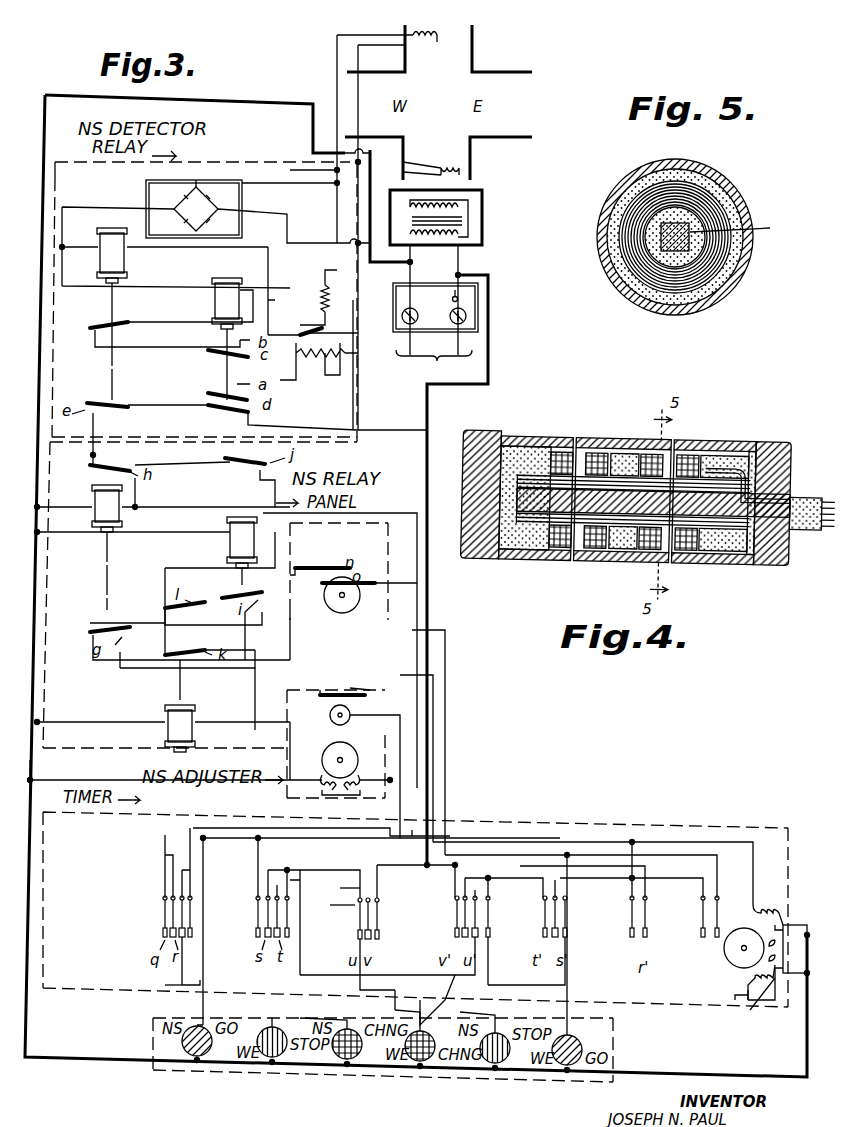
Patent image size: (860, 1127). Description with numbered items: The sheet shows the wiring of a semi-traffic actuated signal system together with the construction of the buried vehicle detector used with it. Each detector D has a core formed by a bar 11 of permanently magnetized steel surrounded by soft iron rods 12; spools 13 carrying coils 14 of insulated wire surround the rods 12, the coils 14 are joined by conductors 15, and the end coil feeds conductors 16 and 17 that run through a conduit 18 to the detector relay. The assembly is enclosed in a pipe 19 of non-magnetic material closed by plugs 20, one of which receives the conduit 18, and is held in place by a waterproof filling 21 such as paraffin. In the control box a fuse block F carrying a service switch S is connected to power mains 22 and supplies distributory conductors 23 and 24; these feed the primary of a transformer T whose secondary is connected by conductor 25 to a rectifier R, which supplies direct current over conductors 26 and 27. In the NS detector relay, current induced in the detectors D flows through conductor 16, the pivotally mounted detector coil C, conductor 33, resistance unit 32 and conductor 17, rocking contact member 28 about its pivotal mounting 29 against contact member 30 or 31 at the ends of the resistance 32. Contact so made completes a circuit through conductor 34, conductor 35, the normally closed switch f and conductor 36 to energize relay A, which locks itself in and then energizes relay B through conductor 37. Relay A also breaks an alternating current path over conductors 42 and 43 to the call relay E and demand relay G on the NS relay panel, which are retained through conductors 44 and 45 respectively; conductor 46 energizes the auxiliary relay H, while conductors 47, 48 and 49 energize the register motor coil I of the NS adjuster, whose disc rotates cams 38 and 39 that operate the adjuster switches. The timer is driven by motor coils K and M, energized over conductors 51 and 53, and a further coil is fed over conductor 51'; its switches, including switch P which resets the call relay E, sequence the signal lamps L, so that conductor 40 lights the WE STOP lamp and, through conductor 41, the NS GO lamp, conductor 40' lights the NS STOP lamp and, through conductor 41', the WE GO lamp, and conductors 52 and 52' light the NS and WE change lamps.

In FIG. 3, the distributory conductor 24 is at (66, 96).
In FIG. 3, the conductor 16 is at (336, 88).
In FIG. 4, the conductor 16 is at (712, 450).
In FIG. 3, the conductor 17 is at (358, 95).
In FIG. 4, the conductor 17 is at (740, 462).
In FIG. 3, the conductor 25 is at (322, 184).
In FIG. 3, the conductor 26 is at (100, 204).
In FIG. 3, the conductor 27 is at (282, 214).
In FIG. 3, the conductor 37 is at (190, 255).
In FIG. 3, the conductor 36 is at (182, 320).
In FIG. 3, the conductor 35 is at (162, 346).
In FIG. 3, the conductor 33 is at (284, 317).
In FIG. 3, the conductor 34 is at (307, 319).
In FIG. 3, the pivotal mounting 29 is at (326, 306).
In FIG. 3, the contact member 28 is at (350, 335).
In FIG. 3, the contact member 30 is at (319, 361).
In FIG. 3, the resistance unit 32 is at (336, 364).
In FIG. 3, the contact member 31 is at (356, 358).
In FIG. 3, the power mains 22 is at (434, 365).
In FIG. 3, the distributory conductor 23 is at (488, 275).
In FIG. 3, the conductor 42 is at (183, 410).
In FIG. 3, the conductor 43 is at (160, 460).
In FIG. 3, the conductor 48 is at (204, 565).
In FIG. 3, the conductor 47 is at (212, 600).
In FIG. 3, the conductor 51' is at (429, 749).
In FIG. 3, the conductor 45 is at (318, 564).
In FIG. 3, the cam 39 is at (328, 608).
In FIG. 3, the conductor 41' is at (385, 833).
In FIG. 3, the conductor 46 is at (243, 730).
In FIG. 3, the conductor 49 is at (250, 690).
In FIG. 3, the cam 38 is at (330, 715).
In FIG. 3, the conductor 41 is at (264, 866).
In FIG. 3, the conductor 44 is at (418, 513).
In FIG. 3, the conductor 52 is at (348, 960).
In FIG. 3, the conductor 53 is at (292, 893).
In FIG. 3, the conductor 40 is at (305, 946).
In FIG. 3, the conductor 52' is at (452, 945).
In FIG. 3, the conductor 40' is at (530, 946).
In FIG. 3, the conductor 51 is at (447, 918).
In FIG. 3, the rectifier R is at (146, 190).
In FIG. 3, the relay B is at (112, 314).
In FIG. 3, the relay A is at (227, 339).
In FIG. 3, the NS call relay E is at (107, 547).
In FIG. 3, the NS demand relay G is at (242, 551).
In FIG. 3, the NS auxiliary relay H is at (180, 728).
In FIG. 3, the transformer T is at (483, 200).
In FIG. 3, the fuse block F is at (393, 288).
In FIG. 3, the service switch S is at (450, 298).
In FIG. 3, the detector coil C is at (320, 292).
In FIG. 3, the traffic actuated detector D is at (437, 42).
In FIG. 3, the register motor coil I is at (340, 768).
In FIG. 3, the timer switch P is at (718, 955).
In FIG. 3, the timer motor coil K is at (765, 970).
In FIG. 3, the timer motor coil M is at (772, 962).
In FIG. 3, the signal lamps L is at (153, 1030).
In FIG. 3, the switch f is at (85, 330).
In FIG. 5, the bar of permanently magnetized steel 11 is at (660, 245).
In FIG. 4, the bar of permanently magnetized steel 11 is at (517, 500).
In FIG. 5, the soft iron rods 12 is at (618, 288).
In FIG. 4, the soft iron rods 12 is at (530, 518).
In FIG. 5, the spools 13 is at (695, 300).
In FIG. 4, the spools 13 is at (592, 450).
In FIG. 5, the coil 14 is at (741, 228).
In FIG. 4, the coil 14 is at (562, 545).
In FIG. 4, the conductors 15 is at (625, 450).
In FIG. 4, the conduit 18 is at (812, 488).
In FIG. 5, the pipe 19 is at (718, 172).
In FIG. 4, the pipe 19 is at (610, 560).
In FIG. 4, the plugs 20 is at (495, 436).
In FIG. 5, the filling 21 is at (628, 190).
In FIG. 4, the filling 21 is at (522, 450).